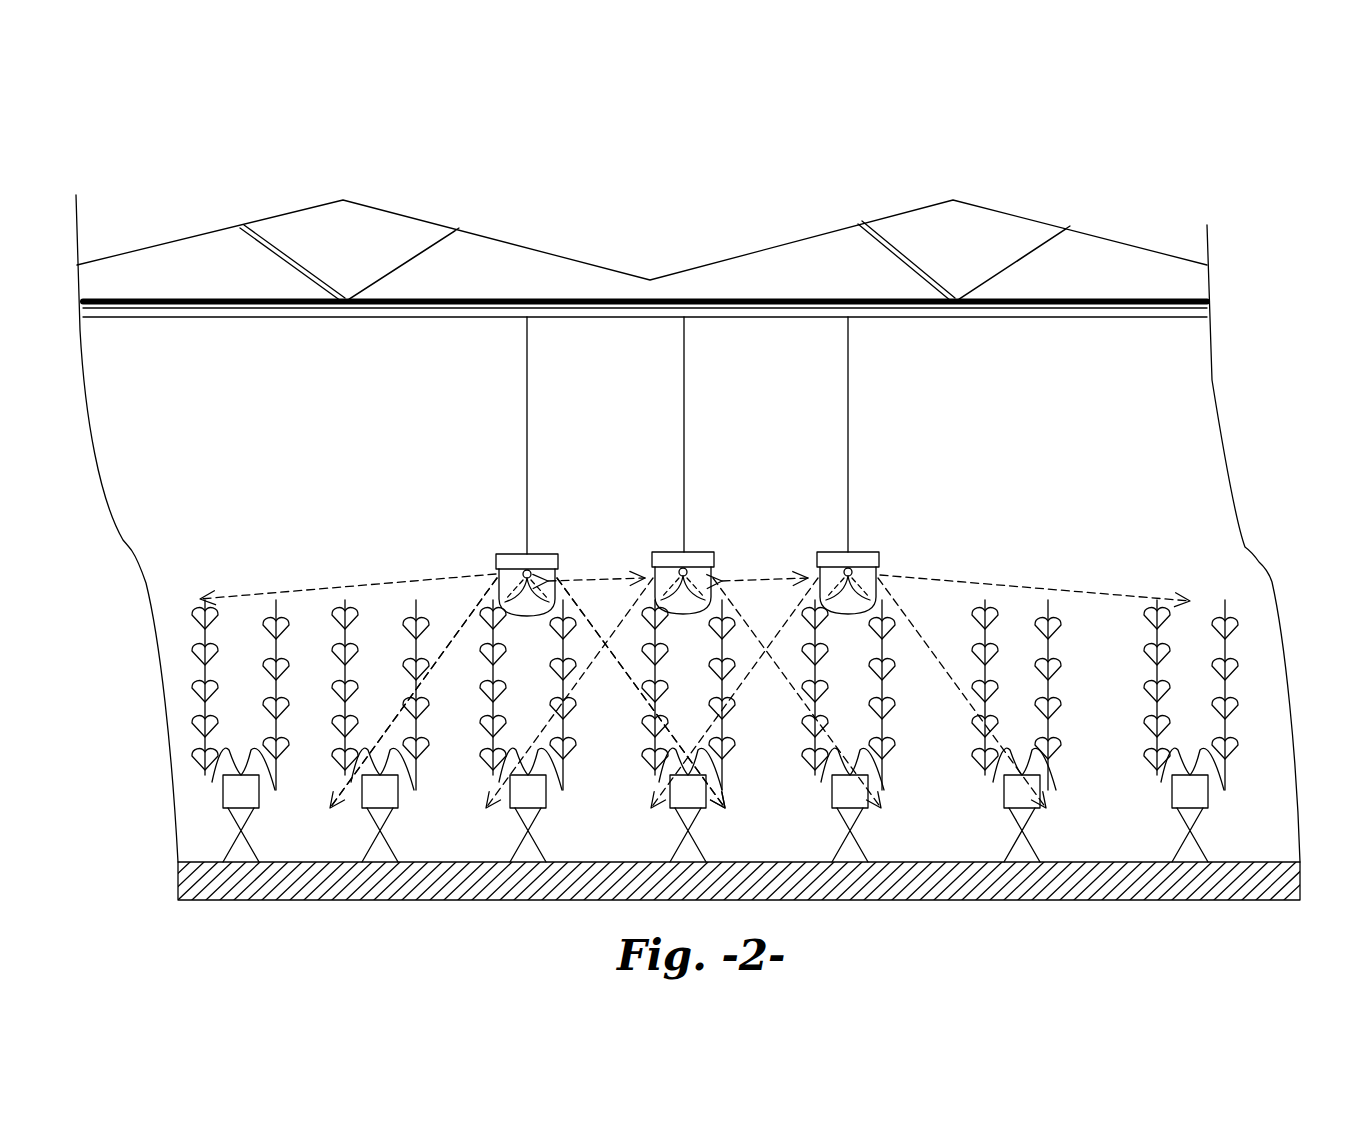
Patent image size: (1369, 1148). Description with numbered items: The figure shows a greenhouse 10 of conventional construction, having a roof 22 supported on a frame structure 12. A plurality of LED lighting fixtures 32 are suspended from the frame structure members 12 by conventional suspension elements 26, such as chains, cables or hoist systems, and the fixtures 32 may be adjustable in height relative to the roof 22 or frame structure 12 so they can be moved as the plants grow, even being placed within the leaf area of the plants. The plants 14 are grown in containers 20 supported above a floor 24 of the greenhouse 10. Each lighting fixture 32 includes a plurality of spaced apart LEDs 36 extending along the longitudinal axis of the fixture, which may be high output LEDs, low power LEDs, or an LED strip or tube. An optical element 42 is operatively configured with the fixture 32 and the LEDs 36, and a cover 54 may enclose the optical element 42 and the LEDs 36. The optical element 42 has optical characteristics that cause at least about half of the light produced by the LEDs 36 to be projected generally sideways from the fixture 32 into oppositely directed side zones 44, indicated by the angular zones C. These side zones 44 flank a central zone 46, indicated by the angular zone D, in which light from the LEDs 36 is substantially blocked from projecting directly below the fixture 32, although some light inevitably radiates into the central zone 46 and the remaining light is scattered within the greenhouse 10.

The greenhouse 10 is at (1121, 220).
The frame structure 12 is at (418, 262).
The plants 14 is at (1228, 690).
The containers 20 is at (1197, 797).
The roof 22 is at (710, 263).
The floor 24 is at (1122, 900).
The suspension elements 26 is at (684, 432).
The LED lighting fixture 32 is at (866, 546).
The LEDs 36 is at (668, 550).
The optical element 42 is at (700, 586).
The side zones 44 is at (446, 588).
The central zone 46 is at (522, 668).
The cover 54 is at (880, 586).